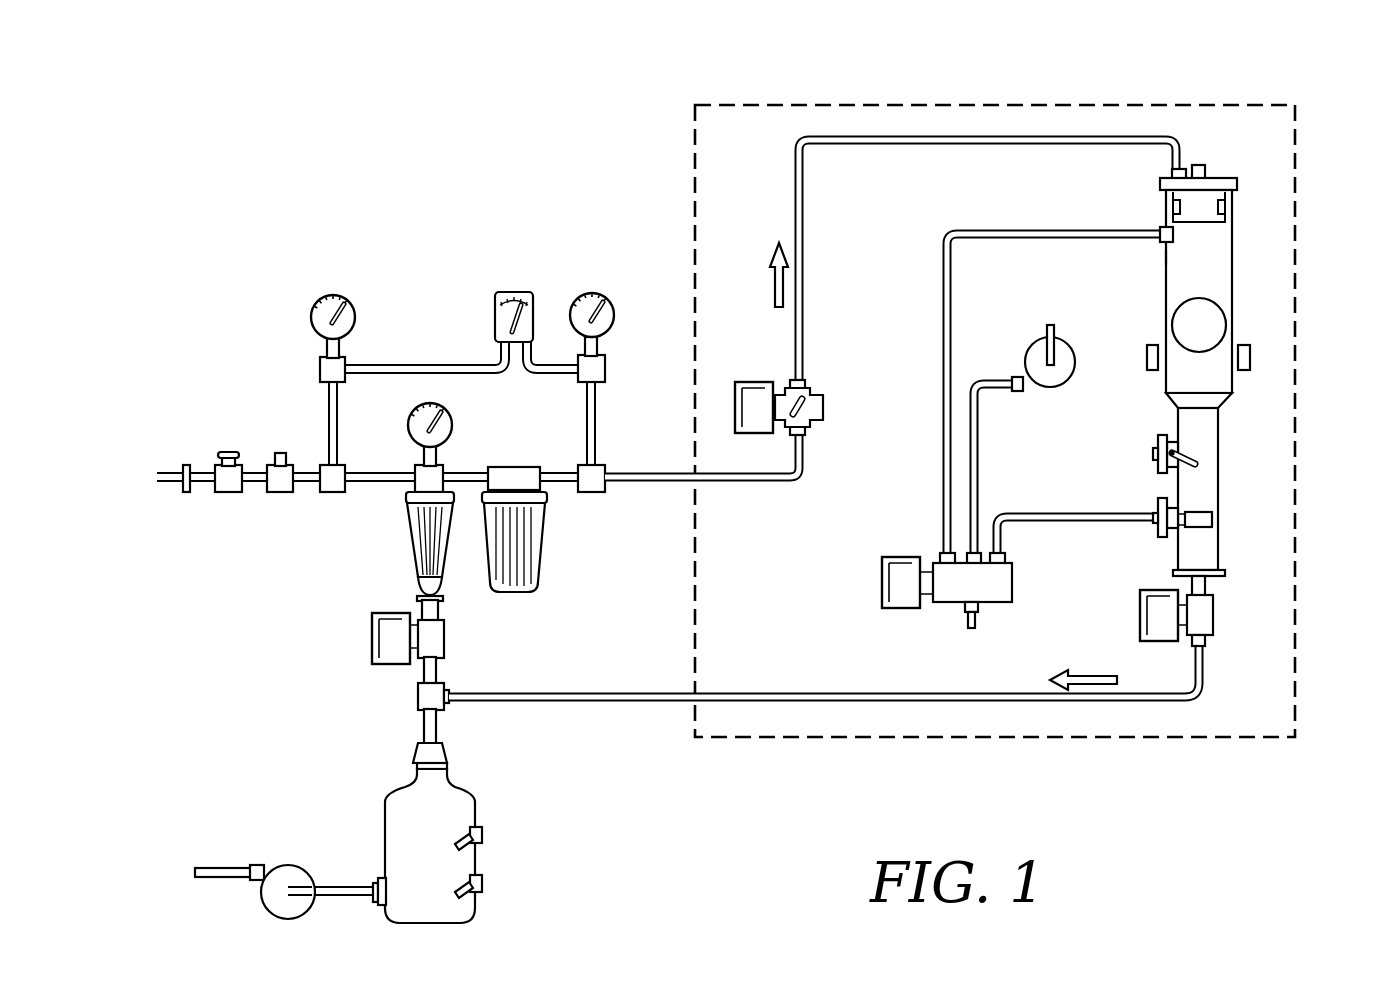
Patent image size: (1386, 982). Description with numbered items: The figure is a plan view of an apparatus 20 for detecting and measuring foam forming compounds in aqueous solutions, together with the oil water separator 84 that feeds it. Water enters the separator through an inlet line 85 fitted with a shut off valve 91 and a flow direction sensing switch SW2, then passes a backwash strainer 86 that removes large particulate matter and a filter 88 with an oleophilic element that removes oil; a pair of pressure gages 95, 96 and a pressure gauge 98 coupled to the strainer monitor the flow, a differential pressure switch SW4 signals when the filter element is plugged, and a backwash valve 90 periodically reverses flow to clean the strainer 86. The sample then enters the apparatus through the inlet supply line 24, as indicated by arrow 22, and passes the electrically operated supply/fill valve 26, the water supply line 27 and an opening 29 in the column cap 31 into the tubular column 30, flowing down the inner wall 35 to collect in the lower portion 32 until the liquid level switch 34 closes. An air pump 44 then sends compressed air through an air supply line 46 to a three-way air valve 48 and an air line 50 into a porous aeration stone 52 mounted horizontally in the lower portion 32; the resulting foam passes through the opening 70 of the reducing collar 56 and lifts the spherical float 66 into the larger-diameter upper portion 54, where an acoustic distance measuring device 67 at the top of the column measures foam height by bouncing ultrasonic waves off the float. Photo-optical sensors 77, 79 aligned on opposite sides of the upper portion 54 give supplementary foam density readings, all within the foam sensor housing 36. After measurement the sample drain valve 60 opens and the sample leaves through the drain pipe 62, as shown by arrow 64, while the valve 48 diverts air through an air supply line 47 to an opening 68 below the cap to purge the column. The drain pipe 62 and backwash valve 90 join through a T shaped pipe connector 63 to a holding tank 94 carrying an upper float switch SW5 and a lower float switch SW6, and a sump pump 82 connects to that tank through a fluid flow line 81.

The apparatus 20 is at (655, 133).
The arrow 22 is at (773, 292).
The inlet supply line 24 is at (805, 455).
The supply/fill valve 26 is at (825, 405).
The water supply line 27 is at (1043, 134).
The opening 29 is at (1173, 174).
The tubular column 30 is at (1246, 287).
The column cap 31 is at (1218, 216).
The lower portion 32 is at (1218, 496).
The liquid level switch 34 is at (1200, 452).
The inner wall/sides 35 is at (1232, 262).
The foam sensor housing 36 is at (682, 112).
The air pump 44 is at (1026, 358).
The air supply line 46 is at (978, 419).
The air supply line 47 is at (1027, 232).
The three-way air valve 48 is at (1005, 580).
The air line 50 is at (1070, 510).
The porous aeration stone 52 is at (1200, 520).
The upper portion 54 is at (1166, 257).
The reducing collar 56 is at (1172, 402).
The sample drain valve 60 is at (1205, 612).
The drain pipe 62 is at (1205, 655).
The T shaped pipe connector 63 is at (420, 699).
The arrow 64 is at (1094, 675).
The float/target 66 is at (1213, 322).
The acoustic distance measuring device 67 is at (1203, 165).
The opening 68 is at (1165, 228).
The opening 70 is at (1200, 405).
The photo-optical sensor 77 is at (1252, 360).
The photo-optical sensor 79 is at (1148, 357).
The fluid flow line 81 is at (340, 887).
The sump pump 82 is at (290, 880).
The oil water separator 84 is at (420, 272).
The inlet line 85 is at (165, 474).
The backwash strainer 86 is at (414, 571).
The filter 88 is at (547, 582).
The backwash valve 90 is at (372, 630).
The shut off valve 91 is at (236, 487).
The holding tank 94 is at (405, 778).
The pressure gage 95 is at (333, 294).
The pressure gage 96 is at (592, 293).
The pressure gauge 98 is at (452, 418).
The flow direction sensing switch SW2 is at (278, 462).
The differential pressure switch SW4 is at (500, 291).
The upper float switch SW5 is at (478, 833).
The lower float switch SW6 is at (478, 878).